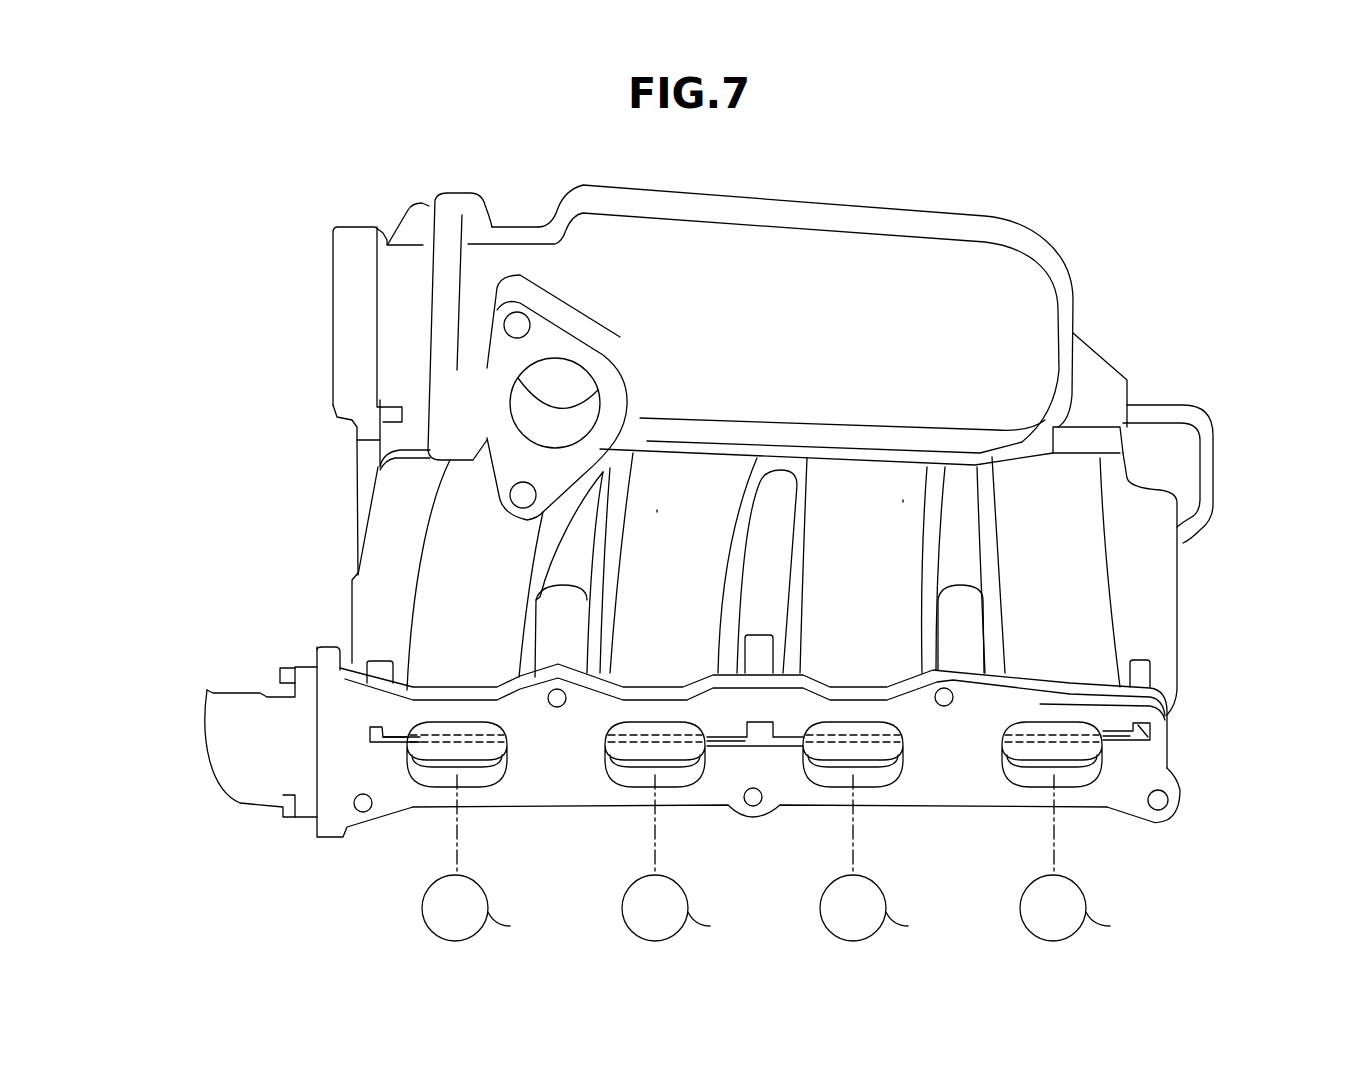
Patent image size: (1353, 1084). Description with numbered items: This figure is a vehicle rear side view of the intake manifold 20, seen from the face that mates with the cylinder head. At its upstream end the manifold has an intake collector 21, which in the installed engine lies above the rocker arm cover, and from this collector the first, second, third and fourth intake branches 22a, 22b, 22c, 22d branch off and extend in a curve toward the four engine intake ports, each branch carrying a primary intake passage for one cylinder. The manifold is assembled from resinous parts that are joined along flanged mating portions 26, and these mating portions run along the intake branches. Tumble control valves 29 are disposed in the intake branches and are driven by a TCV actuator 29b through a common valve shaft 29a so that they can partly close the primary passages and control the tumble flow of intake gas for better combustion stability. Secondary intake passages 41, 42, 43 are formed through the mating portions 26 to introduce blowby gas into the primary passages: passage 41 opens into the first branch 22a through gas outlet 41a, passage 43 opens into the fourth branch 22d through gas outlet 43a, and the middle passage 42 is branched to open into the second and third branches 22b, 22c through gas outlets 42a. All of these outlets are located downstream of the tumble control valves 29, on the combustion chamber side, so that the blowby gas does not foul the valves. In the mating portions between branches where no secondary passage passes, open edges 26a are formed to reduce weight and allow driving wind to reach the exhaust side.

The intake manifold 20 is at (552, 190).
The intake collector 21 is at (803, 240).
The first intake branch 22a is at (1093, 570).
The second intake branch 22b is at (903, 500).
The third intake branch 22c is at (657, 510).
The fourth intake branch 22d is at (467, 510).
The mating portions 26 is at (803, 517).
The open edges 26a is at (535, 640).
The tumble control valves 29 is at (433, 725).
The valve shaft 29a is at (454, 727).
The TCV actuator 29b is at (237, 767).
The secondary intake passage 41 is at (1153, 738).
The gas outlet 41a is at (1120, 742).
The secondary intake passage 42 is at (760, 727).
The gas outlets 42a is at (722, 742).
The secondary intake passage 43 is at (387, 740).
The gas outlet 43a is at (400, 742).